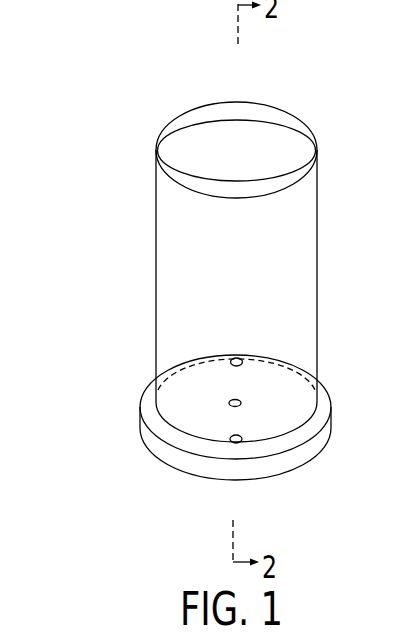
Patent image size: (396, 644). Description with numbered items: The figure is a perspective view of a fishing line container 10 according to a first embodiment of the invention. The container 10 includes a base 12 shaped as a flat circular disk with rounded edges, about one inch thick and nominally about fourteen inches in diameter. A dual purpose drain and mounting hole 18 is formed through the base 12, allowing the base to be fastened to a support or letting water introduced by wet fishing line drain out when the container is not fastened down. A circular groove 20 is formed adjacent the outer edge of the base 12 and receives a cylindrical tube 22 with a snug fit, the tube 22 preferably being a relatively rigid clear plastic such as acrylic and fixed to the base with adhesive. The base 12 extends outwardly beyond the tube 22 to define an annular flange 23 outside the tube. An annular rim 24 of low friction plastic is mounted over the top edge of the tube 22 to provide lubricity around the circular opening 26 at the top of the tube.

The container 10 is at (68, 196).
The base 12 is at (148, 440).
The drain and mounting hole 18 is at (239, 400).
The circular groove 20 is at (160, 381).
The cylindrical tube 22 is at (318, 280).
The annular flange 23 is at (317, 429).
The annular rim 24 is at (307, 120).
The circular opening 26 is at (198, 152).